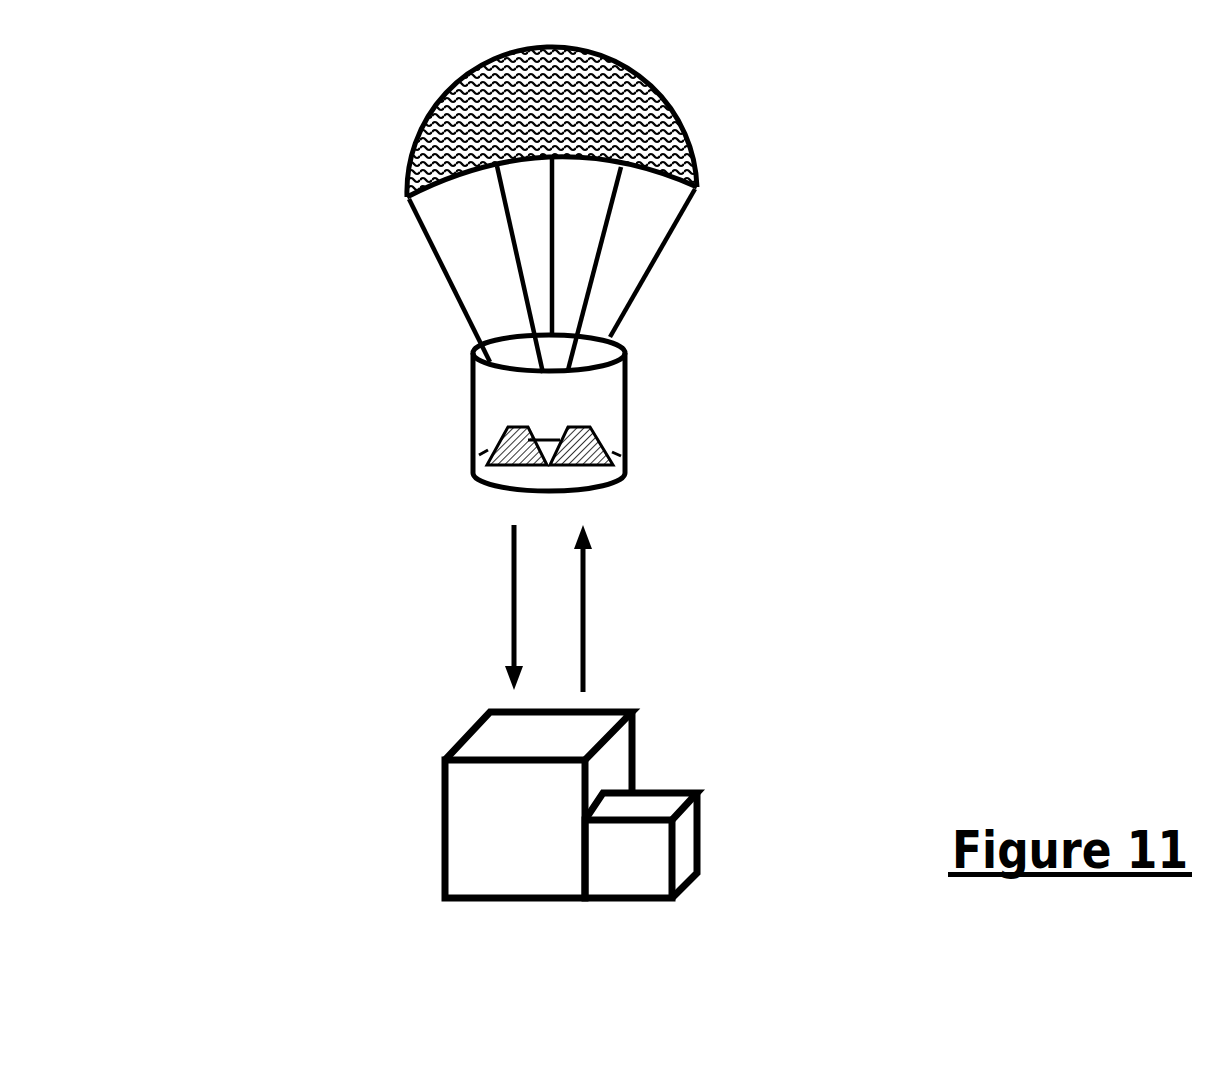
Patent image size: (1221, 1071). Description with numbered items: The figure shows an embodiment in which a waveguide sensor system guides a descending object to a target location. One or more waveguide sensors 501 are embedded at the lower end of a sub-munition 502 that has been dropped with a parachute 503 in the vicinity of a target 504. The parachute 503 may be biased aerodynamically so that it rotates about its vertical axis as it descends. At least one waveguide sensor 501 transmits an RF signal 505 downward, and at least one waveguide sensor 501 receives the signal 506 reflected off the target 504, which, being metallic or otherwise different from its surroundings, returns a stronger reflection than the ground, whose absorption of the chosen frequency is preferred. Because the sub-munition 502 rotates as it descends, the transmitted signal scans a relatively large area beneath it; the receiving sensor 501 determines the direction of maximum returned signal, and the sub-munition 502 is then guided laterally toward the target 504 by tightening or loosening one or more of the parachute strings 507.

The waveguide sensor 501 is at (458, 438).
The sub-munition 502 is at (435, 391).
The parachute 503 is at (388, 142).
The target 504 is at (413, 798).
The RF signal 505 is at (480, 586).
The reflected signal 506 is at (614, 591).
The parachute strings 507 is at (681, 264).